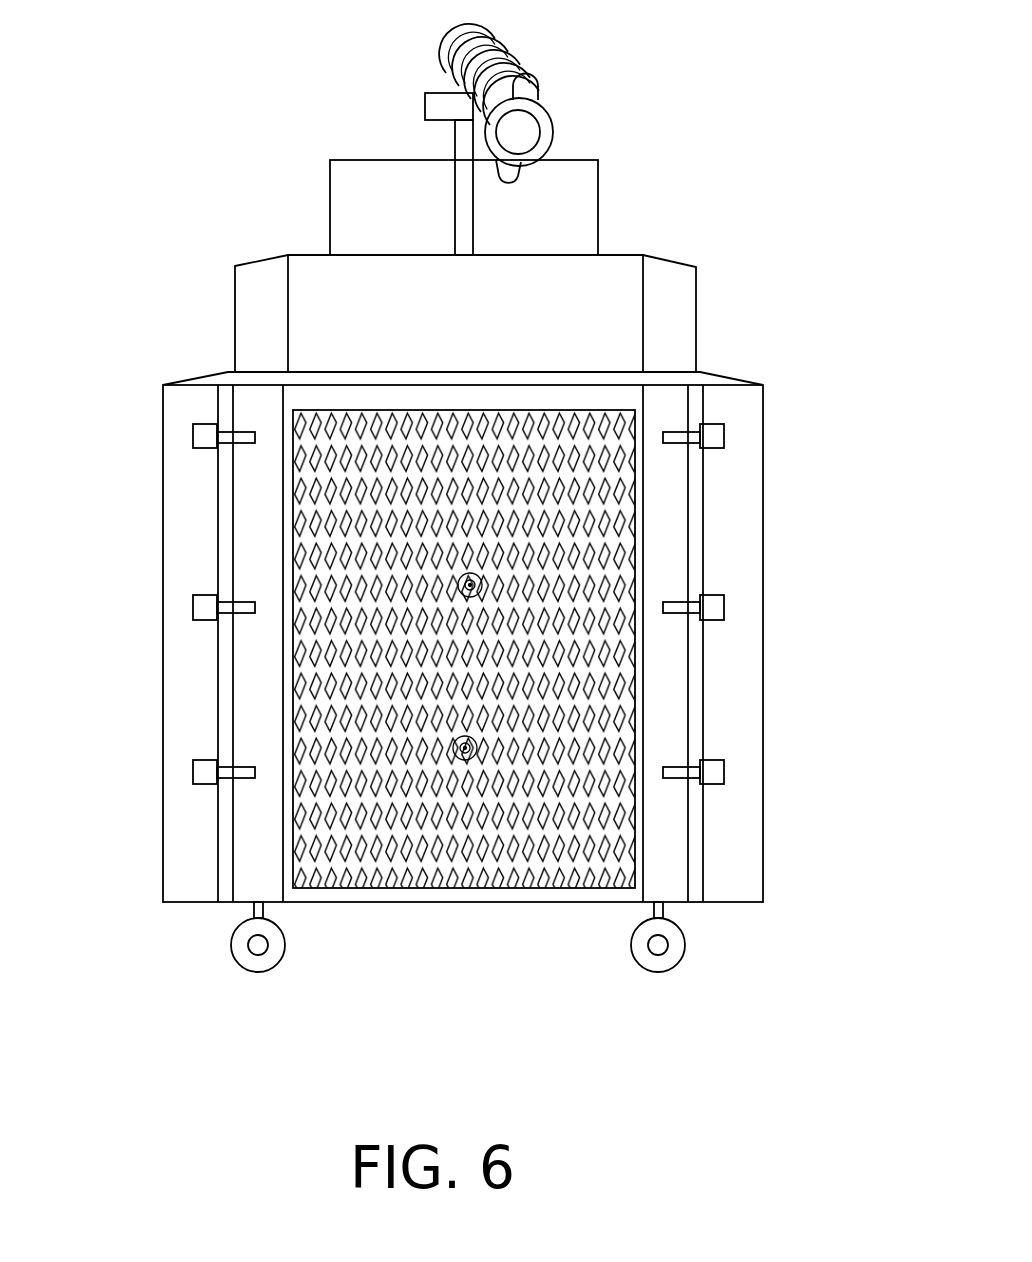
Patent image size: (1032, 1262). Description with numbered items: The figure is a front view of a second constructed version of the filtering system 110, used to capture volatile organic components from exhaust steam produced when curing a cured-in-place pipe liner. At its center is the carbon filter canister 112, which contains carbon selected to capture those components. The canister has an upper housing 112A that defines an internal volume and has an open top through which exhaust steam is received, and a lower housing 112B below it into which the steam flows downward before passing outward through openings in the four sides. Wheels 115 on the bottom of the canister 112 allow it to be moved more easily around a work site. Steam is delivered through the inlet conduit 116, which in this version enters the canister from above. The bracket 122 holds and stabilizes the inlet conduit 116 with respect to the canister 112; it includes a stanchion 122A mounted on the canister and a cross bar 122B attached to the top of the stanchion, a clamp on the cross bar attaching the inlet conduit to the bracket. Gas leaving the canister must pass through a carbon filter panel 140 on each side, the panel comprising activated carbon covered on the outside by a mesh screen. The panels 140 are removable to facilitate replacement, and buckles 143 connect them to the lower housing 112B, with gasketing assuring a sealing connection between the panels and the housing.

The filtering system 110 is at (752, 120).
The carbon filter canister 112 is at (183, 297).
The upper housing 112A is at (697, 280).
The lower housing 112B is at (665, 887).
The wheels 115 is at (280, 953).
The inlet conduit 116 is at (512, 52).
The bracket 122 is at (447, 148).
The stanchion 122A is at (463, 228).
The cross bar 122B is at (433, 107).
The carbon filter panel 140 is at (648, 710).
The buckles 143 is at (200, 435).